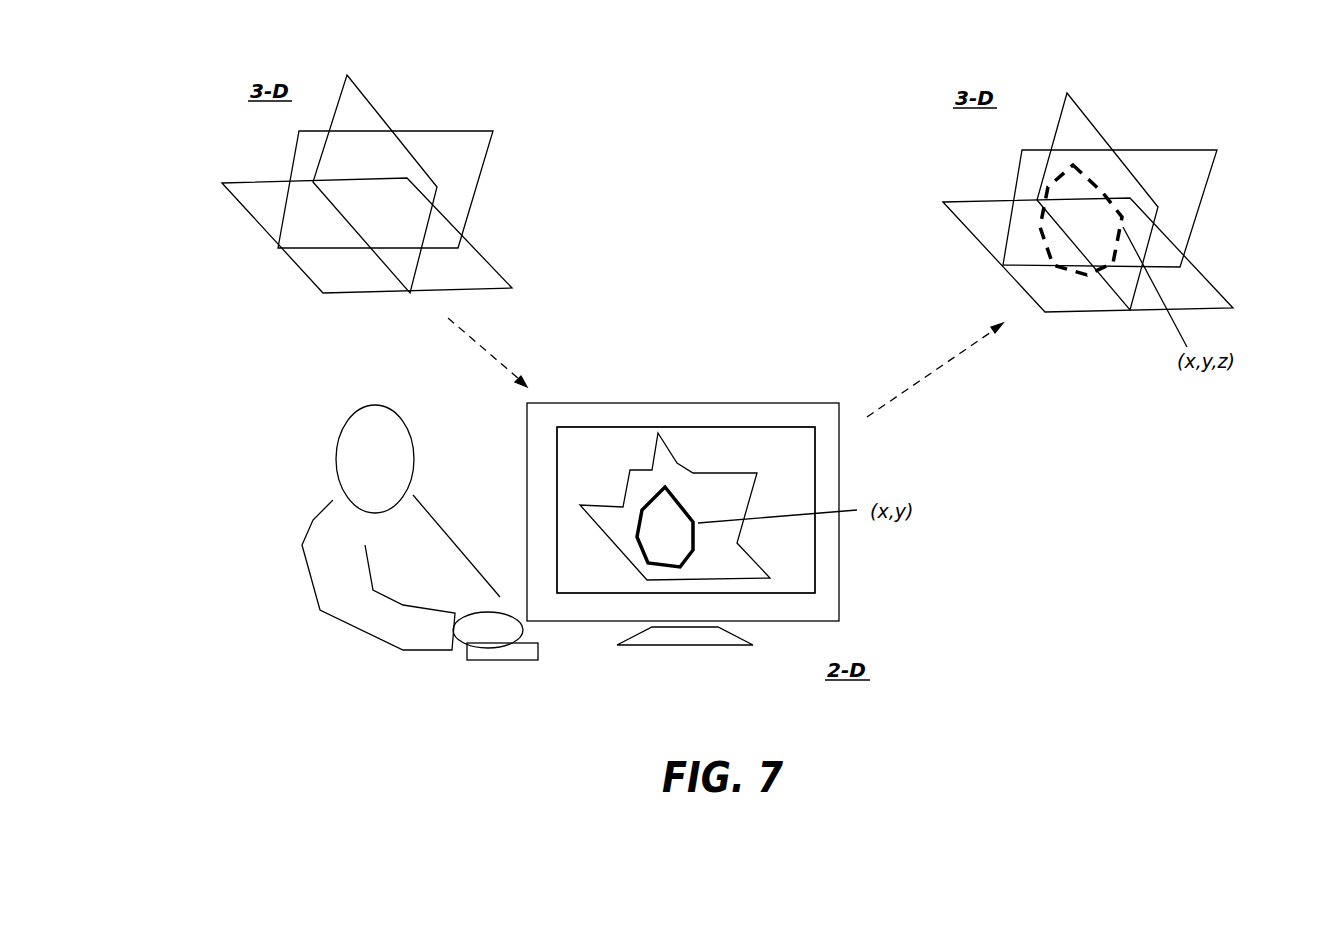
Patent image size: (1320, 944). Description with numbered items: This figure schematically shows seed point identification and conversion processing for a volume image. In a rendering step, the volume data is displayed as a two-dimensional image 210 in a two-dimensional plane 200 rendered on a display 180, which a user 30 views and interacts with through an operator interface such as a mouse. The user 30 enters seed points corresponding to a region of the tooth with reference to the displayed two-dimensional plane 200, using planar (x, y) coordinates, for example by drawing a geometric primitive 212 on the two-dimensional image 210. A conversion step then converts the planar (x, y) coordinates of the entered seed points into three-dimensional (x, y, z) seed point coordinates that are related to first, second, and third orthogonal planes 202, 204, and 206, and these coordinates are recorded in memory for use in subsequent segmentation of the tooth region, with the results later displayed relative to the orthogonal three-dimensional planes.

The user 30 is at (435, 573).
The display 180 is at (720, 423).
The 2-D plane 200 is at (783, 575).
The first orthogonal plane 202 is at (483, 267).
The second orthogonal plane 204 is at (483, 175).
The third orthogonal plane 206 is at (1090, 115).
The 2-D image 210 is at (672, 458).
The geometric primitive 212 is at (647, 498).